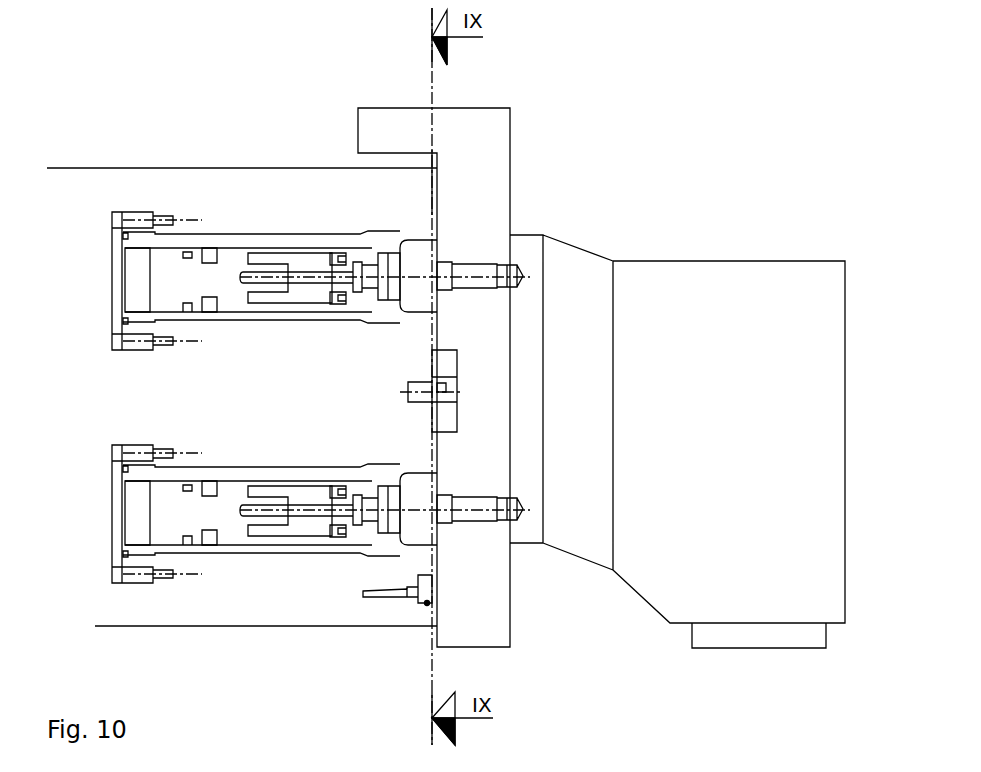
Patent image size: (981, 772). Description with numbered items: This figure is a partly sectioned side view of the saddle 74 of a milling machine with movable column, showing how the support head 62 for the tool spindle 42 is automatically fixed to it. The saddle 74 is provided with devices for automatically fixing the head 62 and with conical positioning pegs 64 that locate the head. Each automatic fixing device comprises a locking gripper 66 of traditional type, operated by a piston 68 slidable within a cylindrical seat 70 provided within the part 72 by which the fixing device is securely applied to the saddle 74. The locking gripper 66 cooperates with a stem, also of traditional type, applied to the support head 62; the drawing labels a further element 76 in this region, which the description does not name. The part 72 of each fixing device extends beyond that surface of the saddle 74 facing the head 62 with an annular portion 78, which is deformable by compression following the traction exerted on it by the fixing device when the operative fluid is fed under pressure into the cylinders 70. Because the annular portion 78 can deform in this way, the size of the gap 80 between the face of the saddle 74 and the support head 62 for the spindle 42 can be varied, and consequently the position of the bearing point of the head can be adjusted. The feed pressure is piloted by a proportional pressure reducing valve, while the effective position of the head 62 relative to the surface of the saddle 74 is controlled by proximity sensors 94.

The spindle 42 is at (780, 299).
The support head 62 is at (476, 180).
The conical positioning peg 64 is at (442, 388).
The locking gripper 66 is at (345, 298).
The piston 68 is at (165, 276).
The cylindrical seat 70 is at (209, 255).
The part 72 is at (142, 322).
The saddle 74 is at (148, 604).
The nozzle holder 76 is at (408, 272).
The annular portion 78 is at (310, 245).
The gap 80 is at (432, 181).
The proximity sensor 94 is at (435, 606).